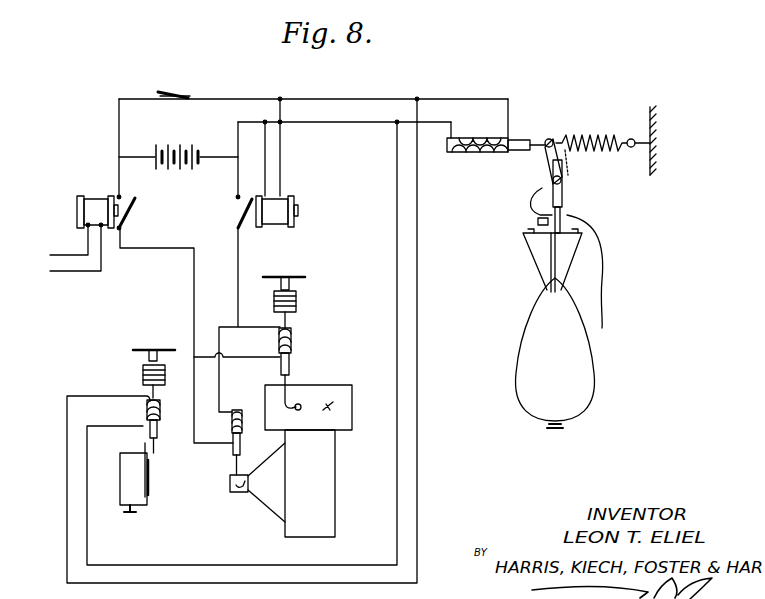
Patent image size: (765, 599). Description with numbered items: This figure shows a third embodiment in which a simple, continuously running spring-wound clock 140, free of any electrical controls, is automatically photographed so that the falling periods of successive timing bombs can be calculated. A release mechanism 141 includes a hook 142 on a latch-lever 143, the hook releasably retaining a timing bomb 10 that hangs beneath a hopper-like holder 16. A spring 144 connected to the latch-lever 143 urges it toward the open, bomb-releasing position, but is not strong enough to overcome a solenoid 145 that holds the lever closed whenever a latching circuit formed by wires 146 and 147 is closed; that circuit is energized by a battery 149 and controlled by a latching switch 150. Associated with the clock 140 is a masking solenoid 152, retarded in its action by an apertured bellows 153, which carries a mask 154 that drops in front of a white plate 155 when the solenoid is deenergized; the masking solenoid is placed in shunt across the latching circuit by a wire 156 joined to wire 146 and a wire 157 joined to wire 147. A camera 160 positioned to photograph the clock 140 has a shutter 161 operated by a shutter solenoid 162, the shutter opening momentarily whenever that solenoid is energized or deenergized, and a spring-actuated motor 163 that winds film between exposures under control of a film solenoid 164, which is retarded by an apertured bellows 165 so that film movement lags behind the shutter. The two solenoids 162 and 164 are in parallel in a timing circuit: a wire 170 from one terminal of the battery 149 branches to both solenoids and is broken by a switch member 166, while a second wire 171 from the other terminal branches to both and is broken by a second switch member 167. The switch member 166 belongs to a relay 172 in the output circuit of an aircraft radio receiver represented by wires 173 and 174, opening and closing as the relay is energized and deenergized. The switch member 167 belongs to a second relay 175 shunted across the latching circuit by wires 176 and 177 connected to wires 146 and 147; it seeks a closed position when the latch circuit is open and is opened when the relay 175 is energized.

The timing bomb 10 is at (518, 339).
The funnel hopper 16 is at (548, 222).
The spring-wound clock 140 is at (138, 502).
The release mechanism 141 is at (572, 195).
The hook 142 is at (546, 212).
The latch-lever 143 is at (548, 165).
The spring 144 is at (600, 138).
The solenoid 145 is at (508, 138).
The wire 146 is at (342, 99).
The wire 147 is at (348, 122).
The battery 149 is at (175, 148).
The latching switch 150 is at (180, 97).
The masking solenoid 152 is at (148, 407).
The apertured bellows 153 is at (147, 365).
The mask 154 is at (158, 448).
The white plate 155 is at (143, 448).
The wire 156 is at (417, 238).
The wire 157 is at (397, 238).
The camera 160 is at (325, 488).
The shutter 161 is at (245, 492).
The shutter solenoid 162 is at (240, 412).
The spring-actuated motor 163 is at (342, 390).
The film solenoid 164 is at (291, 345).
The apertured bellows 165 is at (300, 300).
The switch member 166 is at (137, 210).
The second switch member 167 is at (243, 212).
The wire 170 is at (194, 278).
The second wire 171 is at (238, 279).
The relay 172 is at (82, 197).
The wire 173 is at (55, 252).
The wire 174 is at (58, 272).
The second relay 175 is at (298, 208).
The wire 176 is at (283, 147).
The wire 177 is at (267, 176).